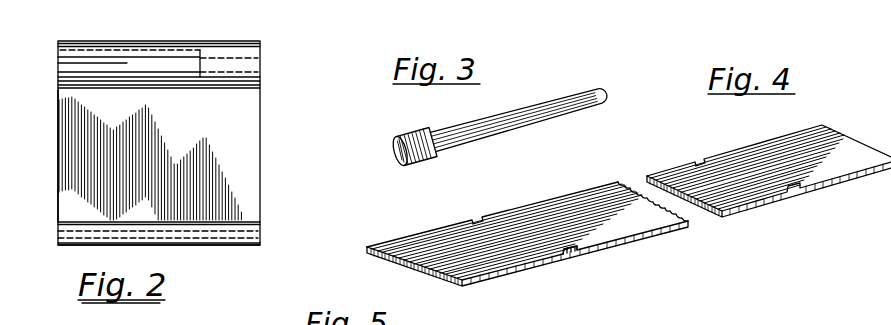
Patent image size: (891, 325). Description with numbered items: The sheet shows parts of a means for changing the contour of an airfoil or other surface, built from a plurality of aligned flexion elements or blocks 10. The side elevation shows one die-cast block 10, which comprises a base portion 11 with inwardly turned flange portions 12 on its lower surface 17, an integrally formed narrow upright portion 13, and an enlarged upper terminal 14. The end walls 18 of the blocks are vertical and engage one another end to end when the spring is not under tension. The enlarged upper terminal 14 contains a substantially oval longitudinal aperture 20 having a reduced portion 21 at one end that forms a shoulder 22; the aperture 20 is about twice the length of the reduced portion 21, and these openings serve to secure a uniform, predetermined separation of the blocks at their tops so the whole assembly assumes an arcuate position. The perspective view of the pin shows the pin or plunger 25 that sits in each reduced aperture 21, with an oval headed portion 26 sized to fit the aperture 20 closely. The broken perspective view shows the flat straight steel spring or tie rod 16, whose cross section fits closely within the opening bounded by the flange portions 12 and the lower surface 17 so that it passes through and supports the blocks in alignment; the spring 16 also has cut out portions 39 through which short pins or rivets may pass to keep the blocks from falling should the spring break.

In FIG. 2, the flexion element or block 10 is at (276, 140).
In FIG. 2, the base portion 11 is at (250, 222).
In FIG. 2, the inwardly turned flange portions 12 is at (253, 250).
In FIG. 2, the narrow upright portion 13 is at (150, 158).
In FIG. 2, the enlarged upper terminal 14 is at (262, 44).
In FIG. 4, the spring or tie rod 16 is at (531, 264).
In FIG. 2, the lower surface of the base 17 is at (60, 231).
In FIG. 2, the end walls 18 is at (58, 190).
In FIG. 2, the longitudinal aperture 20 is at (128, 48).
In FIG. 2, the reduced portion 21 is at (250, 58).
In FIG. 2, the shoulder 22 is at (200, 50).
In FIG. 3, the pin or plunger 25 is at (497, 134).
In FIG. 3, the headed portion 26 is at (414, 163).
In FIG. 4, the cut out portions 39 is at (568, 252).